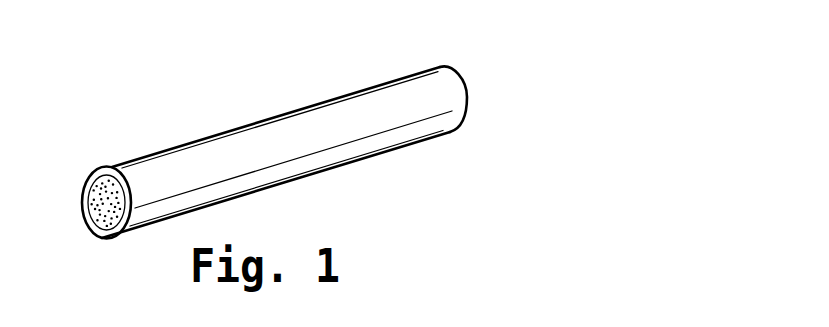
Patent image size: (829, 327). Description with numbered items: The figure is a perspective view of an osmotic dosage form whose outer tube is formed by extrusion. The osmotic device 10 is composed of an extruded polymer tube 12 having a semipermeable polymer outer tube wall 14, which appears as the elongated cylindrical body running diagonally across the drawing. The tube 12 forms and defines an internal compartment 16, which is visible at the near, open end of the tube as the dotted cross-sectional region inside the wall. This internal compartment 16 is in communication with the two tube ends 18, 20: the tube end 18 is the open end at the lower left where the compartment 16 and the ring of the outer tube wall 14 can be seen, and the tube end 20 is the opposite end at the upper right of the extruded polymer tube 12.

The osmotic device 10 is at (265, 122).
The extruded polymer tube 12 is at (386, 83).
The outer tube wall 14 is at (328, 120).
The internal compartment 16 is at (91, 203).
The tube end 18 is at (88, 178).
The tube end 20 is at (466, 82).